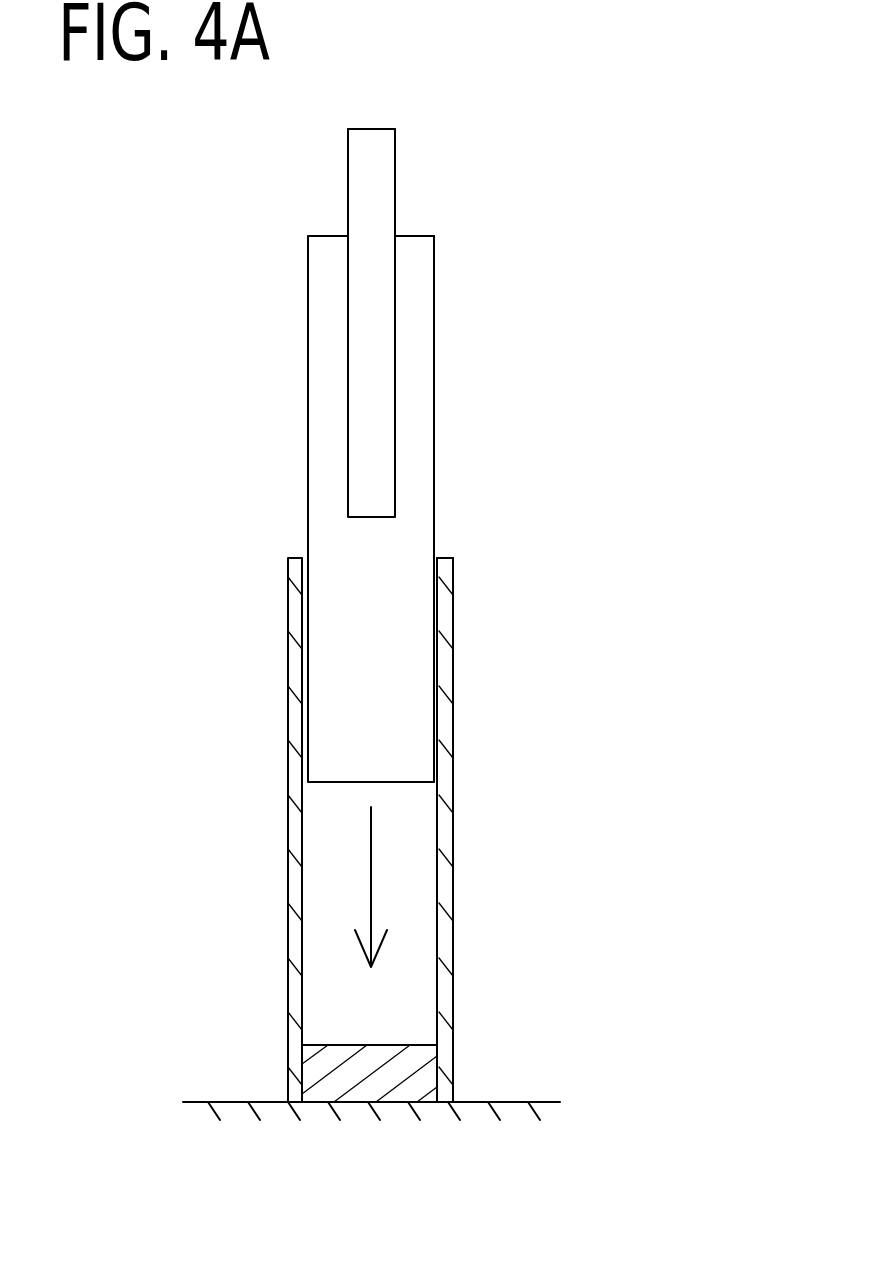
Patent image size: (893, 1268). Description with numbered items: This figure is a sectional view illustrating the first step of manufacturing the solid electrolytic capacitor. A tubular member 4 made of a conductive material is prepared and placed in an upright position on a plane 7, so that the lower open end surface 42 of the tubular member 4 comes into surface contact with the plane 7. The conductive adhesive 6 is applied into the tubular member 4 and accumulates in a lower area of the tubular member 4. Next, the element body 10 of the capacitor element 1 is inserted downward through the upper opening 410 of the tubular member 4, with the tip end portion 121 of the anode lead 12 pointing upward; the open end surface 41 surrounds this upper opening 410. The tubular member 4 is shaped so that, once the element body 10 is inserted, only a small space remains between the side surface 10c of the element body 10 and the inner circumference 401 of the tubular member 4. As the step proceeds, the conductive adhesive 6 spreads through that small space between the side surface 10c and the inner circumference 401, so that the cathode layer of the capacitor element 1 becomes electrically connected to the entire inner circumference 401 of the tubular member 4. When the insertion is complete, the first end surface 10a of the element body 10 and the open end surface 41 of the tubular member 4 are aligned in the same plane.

The capacitor element 1 is at (448, 455).
The element body 10 is at (425, 480).
The first end surface 10a is at (414, 236).
The side surface 10c is at (434, 712).
The anode lead 12 is at (442, 323).
The tip end portion 121 is at (396, 162).
The tubular member 4 is at (399, 833).
The open end surface 41 is at (295, 558).
The upper opening 410 is at (438, 558).
The inner circumference 401 is at (437, 740).
The lower open end surface 42 is at (443, 1104).
The conductive adhesive 6 is at (423, 1077).
The plane 7 is at (227, 1102).